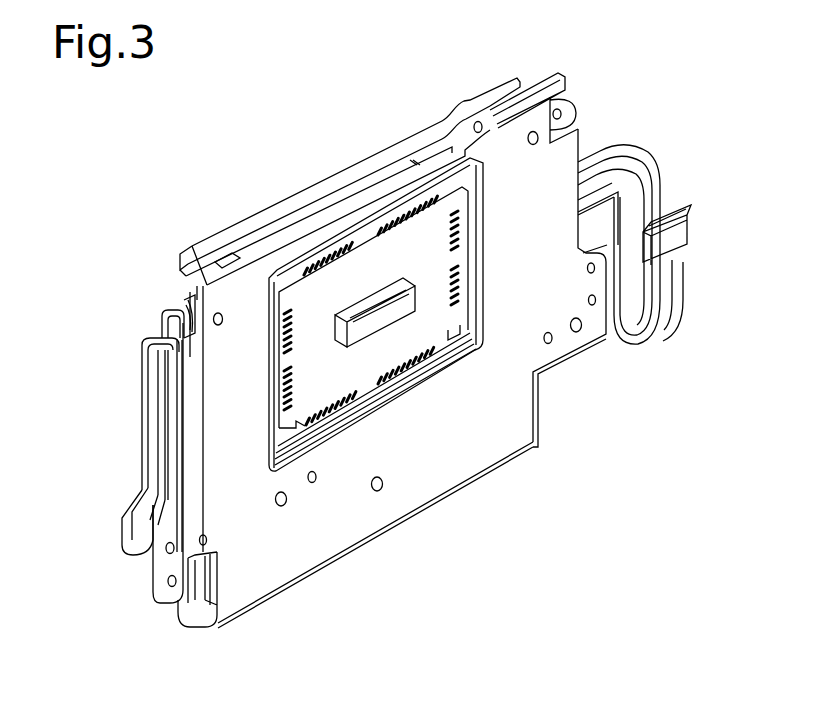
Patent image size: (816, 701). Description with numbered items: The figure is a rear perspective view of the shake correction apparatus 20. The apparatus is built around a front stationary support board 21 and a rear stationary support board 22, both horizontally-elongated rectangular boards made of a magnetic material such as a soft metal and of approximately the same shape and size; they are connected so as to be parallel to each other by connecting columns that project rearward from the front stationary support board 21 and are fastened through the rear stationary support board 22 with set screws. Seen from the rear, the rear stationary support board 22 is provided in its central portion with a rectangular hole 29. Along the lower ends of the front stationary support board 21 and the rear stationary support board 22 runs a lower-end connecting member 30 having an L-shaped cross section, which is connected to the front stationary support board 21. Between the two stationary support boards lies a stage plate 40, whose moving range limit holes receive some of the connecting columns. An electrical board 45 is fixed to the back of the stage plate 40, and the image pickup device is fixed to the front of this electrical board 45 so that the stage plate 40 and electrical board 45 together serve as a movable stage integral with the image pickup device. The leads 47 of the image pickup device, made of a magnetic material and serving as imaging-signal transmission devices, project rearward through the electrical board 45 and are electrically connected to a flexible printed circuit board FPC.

The shake correction apparatus 20 is at (148, 188).
The front stationary support board 21 is at (412, 125).
The rear stationary support board 22 is at (513, 418).
The rectangular hole 29 is at (468, 360).
The lower-end connecting member 30 is at (265, 600).
The stage plate 40 is at (168, 300).
The electrical board 45 is at (450, 263).
The leads 47 is at (460, 236).
The flexible printed circuit board FPC is at (634, 150).